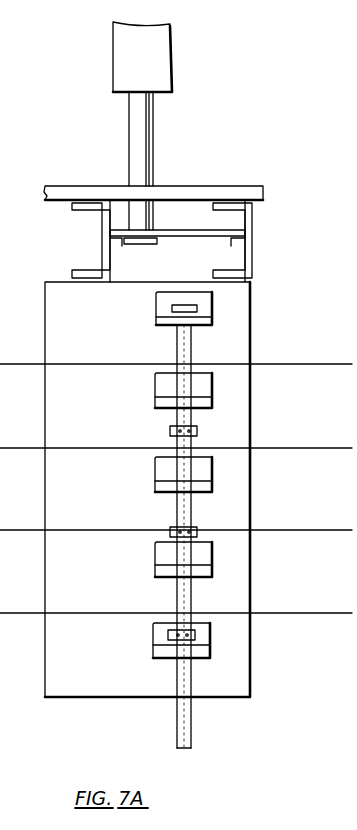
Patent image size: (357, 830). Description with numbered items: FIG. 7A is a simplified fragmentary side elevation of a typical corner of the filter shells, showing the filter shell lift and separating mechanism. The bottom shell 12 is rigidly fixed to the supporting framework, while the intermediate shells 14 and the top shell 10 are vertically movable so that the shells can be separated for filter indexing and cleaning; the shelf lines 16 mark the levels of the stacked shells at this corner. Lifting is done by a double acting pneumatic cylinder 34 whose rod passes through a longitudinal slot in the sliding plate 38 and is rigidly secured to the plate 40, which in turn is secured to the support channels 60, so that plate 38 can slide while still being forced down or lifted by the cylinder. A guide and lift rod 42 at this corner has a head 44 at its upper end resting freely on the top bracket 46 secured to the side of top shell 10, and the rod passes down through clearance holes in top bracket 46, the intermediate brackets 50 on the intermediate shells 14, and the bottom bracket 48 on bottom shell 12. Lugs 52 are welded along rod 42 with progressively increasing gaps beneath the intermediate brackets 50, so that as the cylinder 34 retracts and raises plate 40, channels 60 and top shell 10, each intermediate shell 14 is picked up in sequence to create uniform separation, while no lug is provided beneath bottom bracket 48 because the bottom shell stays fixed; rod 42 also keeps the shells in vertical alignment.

The top shell 10 is at (78, 354).
The bottom shell 12 is at (77, 683).
The intermediate shells 14 is at (78, 436).
The shelf 16 is at (268, 364).
The double acting pneumatic cylinders 34 is at (150, 62).
The sliding plate 38 is at (62, 185).
The plate 40 is at (185, 237).
The guide and lift rods 42 is at (191, 717).
The head 44 is at (172, 308).
The top bracket 46 is at (212, 298).
The bottom bracket 48 is at (152, 630).
The intermediate brackets 50 is at (158, 384).
The lugs 52 is at (172, 430).
The support channels 60 is at (102, 248).